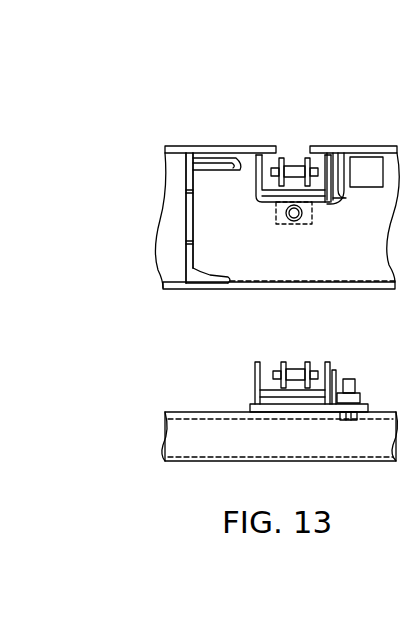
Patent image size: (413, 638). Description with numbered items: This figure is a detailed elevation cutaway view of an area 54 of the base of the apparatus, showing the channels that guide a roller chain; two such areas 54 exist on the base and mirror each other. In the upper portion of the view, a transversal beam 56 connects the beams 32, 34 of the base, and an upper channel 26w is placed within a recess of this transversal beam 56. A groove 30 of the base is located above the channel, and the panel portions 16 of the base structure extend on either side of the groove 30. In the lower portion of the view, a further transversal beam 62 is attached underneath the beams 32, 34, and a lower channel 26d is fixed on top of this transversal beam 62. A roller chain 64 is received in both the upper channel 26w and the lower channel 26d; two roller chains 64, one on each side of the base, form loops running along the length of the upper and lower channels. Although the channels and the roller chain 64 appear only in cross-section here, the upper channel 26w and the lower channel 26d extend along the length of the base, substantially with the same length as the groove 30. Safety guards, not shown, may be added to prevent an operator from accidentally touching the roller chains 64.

The area 54 is at (349, 71).
The panel 16 is at (176, 147).
The transversal beam 56 is at (356, 284).
The beam 32 is at (170, 273).
The beam 34 is at (189, 218).
The groove 30 is at (302, 132).
The upper channel 26w is at (256, 196).
The roller chain 64 is at (288, 158).
The transversal beam 62 is at (168, 454).
The lower channel 26d is at (257, 388).